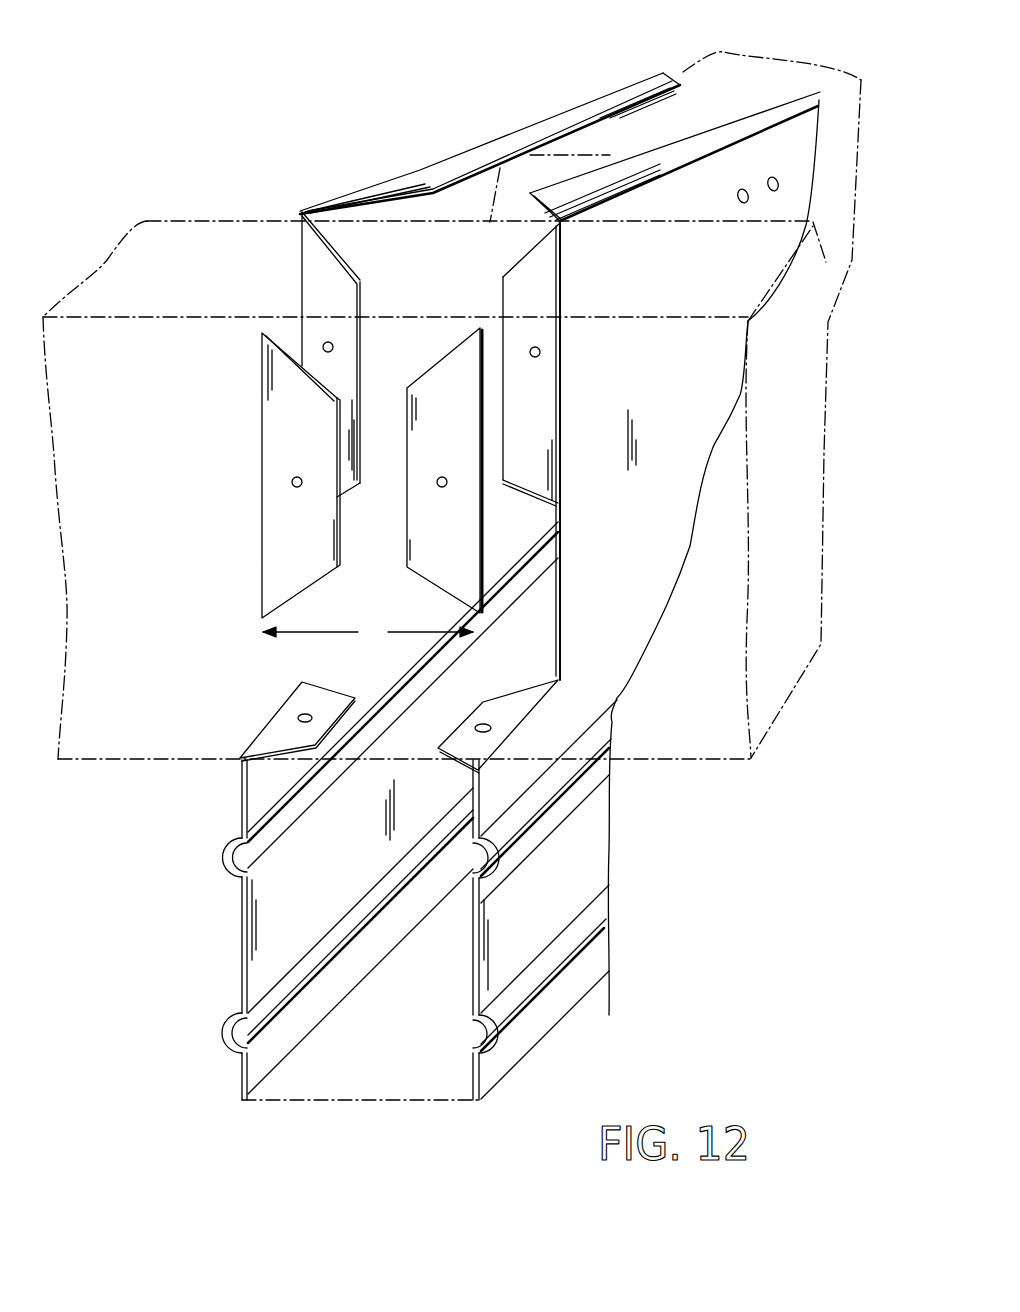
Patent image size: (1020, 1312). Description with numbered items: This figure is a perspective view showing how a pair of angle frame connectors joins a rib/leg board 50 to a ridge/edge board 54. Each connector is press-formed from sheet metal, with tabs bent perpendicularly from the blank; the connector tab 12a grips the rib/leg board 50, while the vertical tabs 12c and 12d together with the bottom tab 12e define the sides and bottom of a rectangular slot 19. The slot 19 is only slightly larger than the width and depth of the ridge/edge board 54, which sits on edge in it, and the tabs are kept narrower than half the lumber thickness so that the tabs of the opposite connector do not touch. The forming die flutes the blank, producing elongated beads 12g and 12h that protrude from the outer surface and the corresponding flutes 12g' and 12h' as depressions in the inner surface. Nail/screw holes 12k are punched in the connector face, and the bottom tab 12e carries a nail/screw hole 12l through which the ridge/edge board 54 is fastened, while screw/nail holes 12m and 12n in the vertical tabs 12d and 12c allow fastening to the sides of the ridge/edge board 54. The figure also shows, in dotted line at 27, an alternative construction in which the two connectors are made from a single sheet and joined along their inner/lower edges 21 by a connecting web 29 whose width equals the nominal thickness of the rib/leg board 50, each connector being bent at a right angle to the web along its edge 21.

The connector tab 12a is at (430, 172).
The connector tab 12c is at (312, 262).
The connector tab 12d is at (563, 278).
The connector tab 12e is at (312, 757).
The bead 12g is at (361, 869).
The flute 12g' is at (387, 801).
The bead 12h is at (499, 599).
The flute 12h' is at (392, 968).
The nail/screw hole 12k is at (773, 191).
The nail/screw hole 12l is at (305, 714).
The screw/nail hole 12m is at (540, 352).
The screw/nail hole 12n is at (333, 347).
The rectangular slot 19 is at (368, 633).
The inner/lower edge 21 is at (318, 1022).
The dotted line 27 is at (300, 1098).
The connecting web 29 is at (403, 1070).
The rib/leg board 50 is at (690, 82).
The ridge/edge board 54 is at (126, 732).